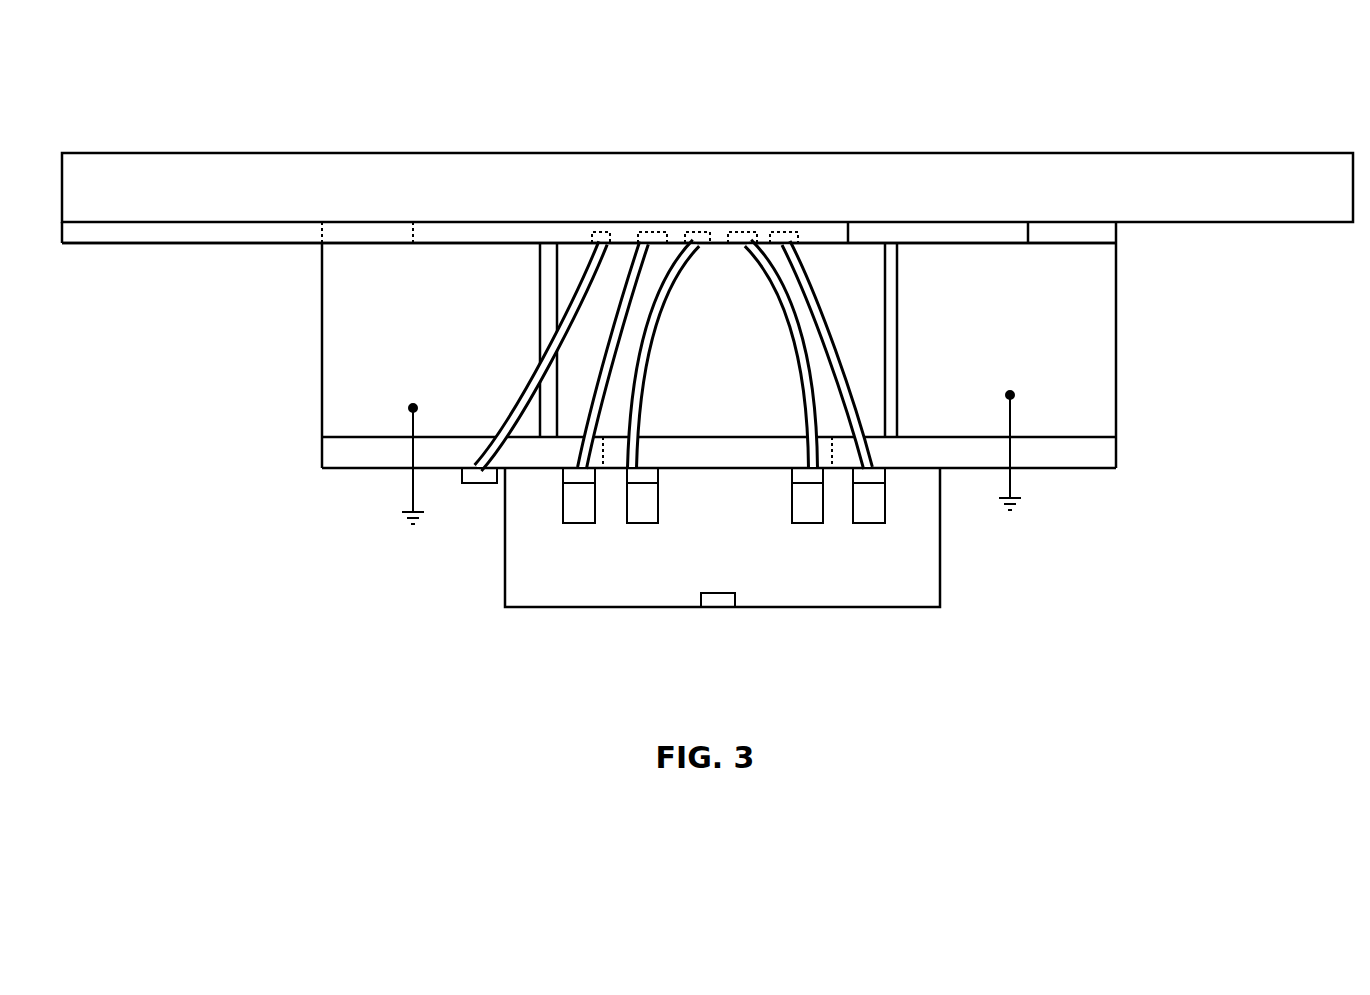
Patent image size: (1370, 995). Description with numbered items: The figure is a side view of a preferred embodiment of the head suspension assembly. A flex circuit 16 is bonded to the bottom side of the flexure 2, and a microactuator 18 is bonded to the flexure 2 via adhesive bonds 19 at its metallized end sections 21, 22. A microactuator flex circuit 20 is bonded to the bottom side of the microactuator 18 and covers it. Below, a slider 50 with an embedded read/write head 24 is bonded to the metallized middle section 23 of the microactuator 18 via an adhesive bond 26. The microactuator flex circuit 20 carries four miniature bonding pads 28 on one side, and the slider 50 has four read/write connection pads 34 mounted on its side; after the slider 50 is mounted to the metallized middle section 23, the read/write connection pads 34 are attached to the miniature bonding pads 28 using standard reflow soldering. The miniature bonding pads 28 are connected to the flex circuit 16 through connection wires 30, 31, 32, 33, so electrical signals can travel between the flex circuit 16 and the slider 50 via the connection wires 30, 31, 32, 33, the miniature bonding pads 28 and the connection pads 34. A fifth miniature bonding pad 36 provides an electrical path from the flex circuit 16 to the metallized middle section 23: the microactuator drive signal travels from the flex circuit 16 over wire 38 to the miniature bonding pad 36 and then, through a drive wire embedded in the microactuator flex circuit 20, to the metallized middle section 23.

The flexure 2 is at (364, 152).
The flex circuit 16 is at (245, 245).
The microactuator 18 is at (1165, 298).
The adhesive bonds 19 is at (415, 230).
The microactuator flex circuit 20 is at (1058, 466).
The metallized end section 21 is at (330, 400).
The metallized end section 22 is at (1118, 345).
The metallized middle section 23 is at (735, 428).
The read/write head 24 is at (723, 604).
The adhesive bond 26 is at (835, 447).
The miniature bonding pads 28 is at (563, 480).
The connection wire 30 is at (815, 280).
The connection wire 31 is at (767, 263).
The connection wire 32 is at (677, 268).
The connection wire 33 is at (628, 267).
The read/write connection pads 34 is at (573, 525).
The fifth miniature bonding pad 36 is at (472, 485).
The wire 38 is at (538, 352).
The slider 50 is at (505, 582).